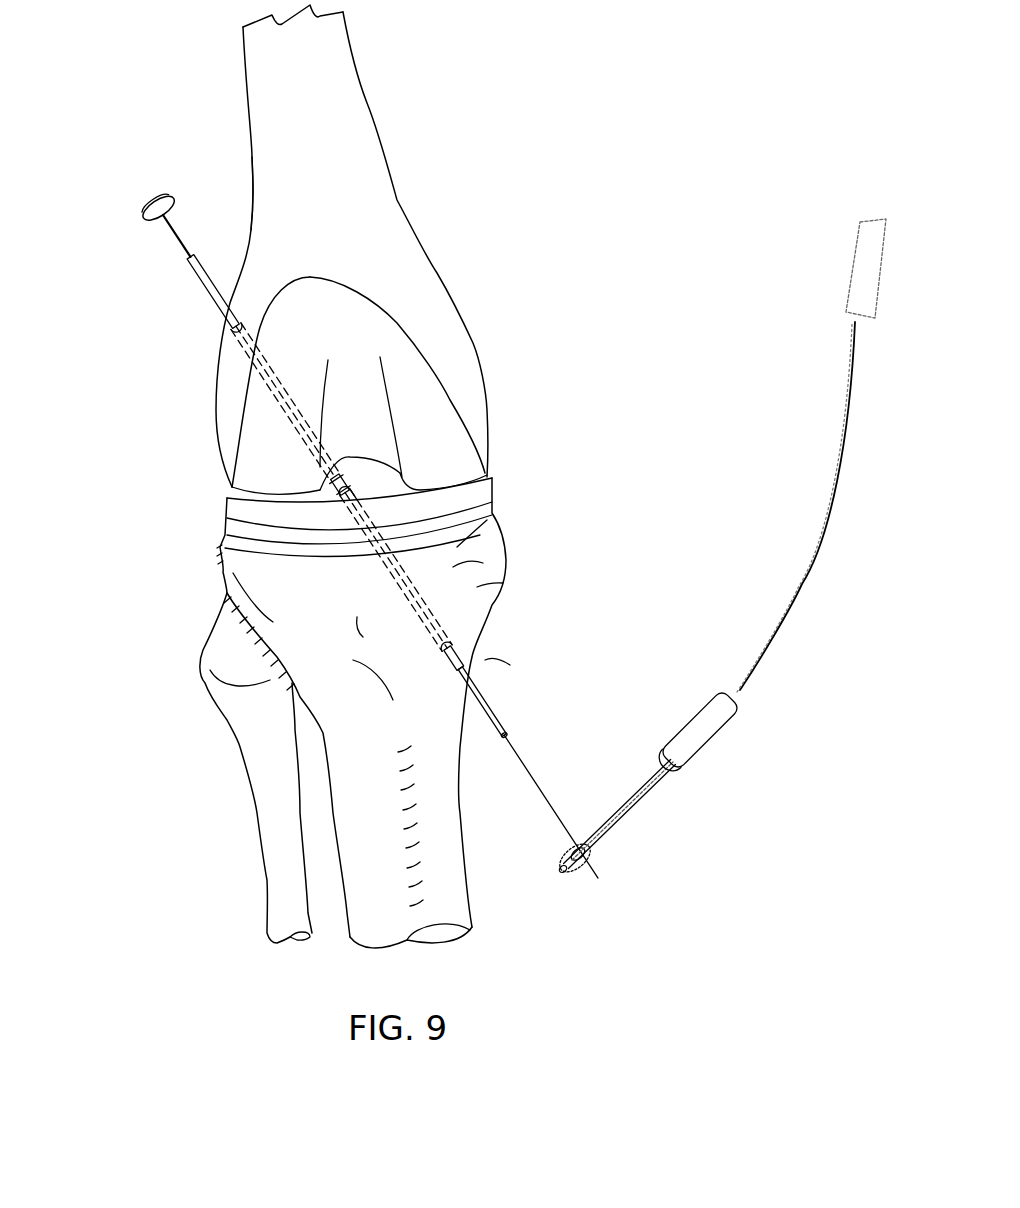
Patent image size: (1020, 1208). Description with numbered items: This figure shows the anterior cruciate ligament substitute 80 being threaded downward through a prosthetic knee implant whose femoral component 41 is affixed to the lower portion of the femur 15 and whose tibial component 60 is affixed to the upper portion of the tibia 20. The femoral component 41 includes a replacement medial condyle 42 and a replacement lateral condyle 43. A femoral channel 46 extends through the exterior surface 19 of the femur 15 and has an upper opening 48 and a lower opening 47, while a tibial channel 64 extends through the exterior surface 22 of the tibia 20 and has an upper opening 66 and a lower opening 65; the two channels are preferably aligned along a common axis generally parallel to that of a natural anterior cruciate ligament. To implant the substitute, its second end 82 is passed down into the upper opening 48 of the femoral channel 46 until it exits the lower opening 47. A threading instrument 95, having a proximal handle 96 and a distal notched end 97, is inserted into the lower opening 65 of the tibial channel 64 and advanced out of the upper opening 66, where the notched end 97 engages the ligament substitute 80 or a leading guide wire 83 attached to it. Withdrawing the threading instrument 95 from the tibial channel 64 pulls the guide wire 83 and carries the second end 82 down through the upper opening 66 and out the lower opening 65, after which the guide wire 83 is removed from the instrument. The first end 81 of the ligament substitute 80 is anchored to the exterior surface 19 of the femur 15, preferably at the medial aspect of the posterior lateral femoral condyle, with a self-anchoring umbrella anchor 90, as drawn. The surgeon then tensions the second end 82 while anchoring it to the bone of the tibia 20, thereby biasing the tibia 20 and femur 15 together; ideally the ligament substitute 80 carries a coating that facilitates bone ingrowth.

The femur 15 is at (352, 107).
The exterior surface of the femur 19 is at (237, 263).
The tibia 20 is at (447, 863).
The exterior surface of the tibia 22 is at (480, 590).
The femoral component 41 is at (452, 378).
The replacement medial condyle 42 is at (453, 457).
The replacement lateral condyle 43 is at (268, 470).
The femoral channel 46 is at (243, 362).
The lower opening of the femoral channel 47 is at (335, 490).
The upper opening of the femoral channel 48 is at (227, 322).
The tibial component 60 is at (503, 487).
The tibial channel 64 is at (452, 613).
The lower opening of the tibial channel 65 is at (457, 652).
The upper opening of the tibial channel 66 is at (334, 495).
The anterior cruciate ligament substitute 80 is at (345, 480).
The first end of the ligament substitute 81 is at (203, 283).
The second end of the ligament substitute 82 is at (505, 712).
The guide wire 83 is at (533, 773).
The self-anchoring umbrella anchor 90 is at (160, 197).
The threading instrument 95 is at (623, 817).
The proximal handle 96 is at (720, 727).
The distal notched end 97 is at (560, 870).